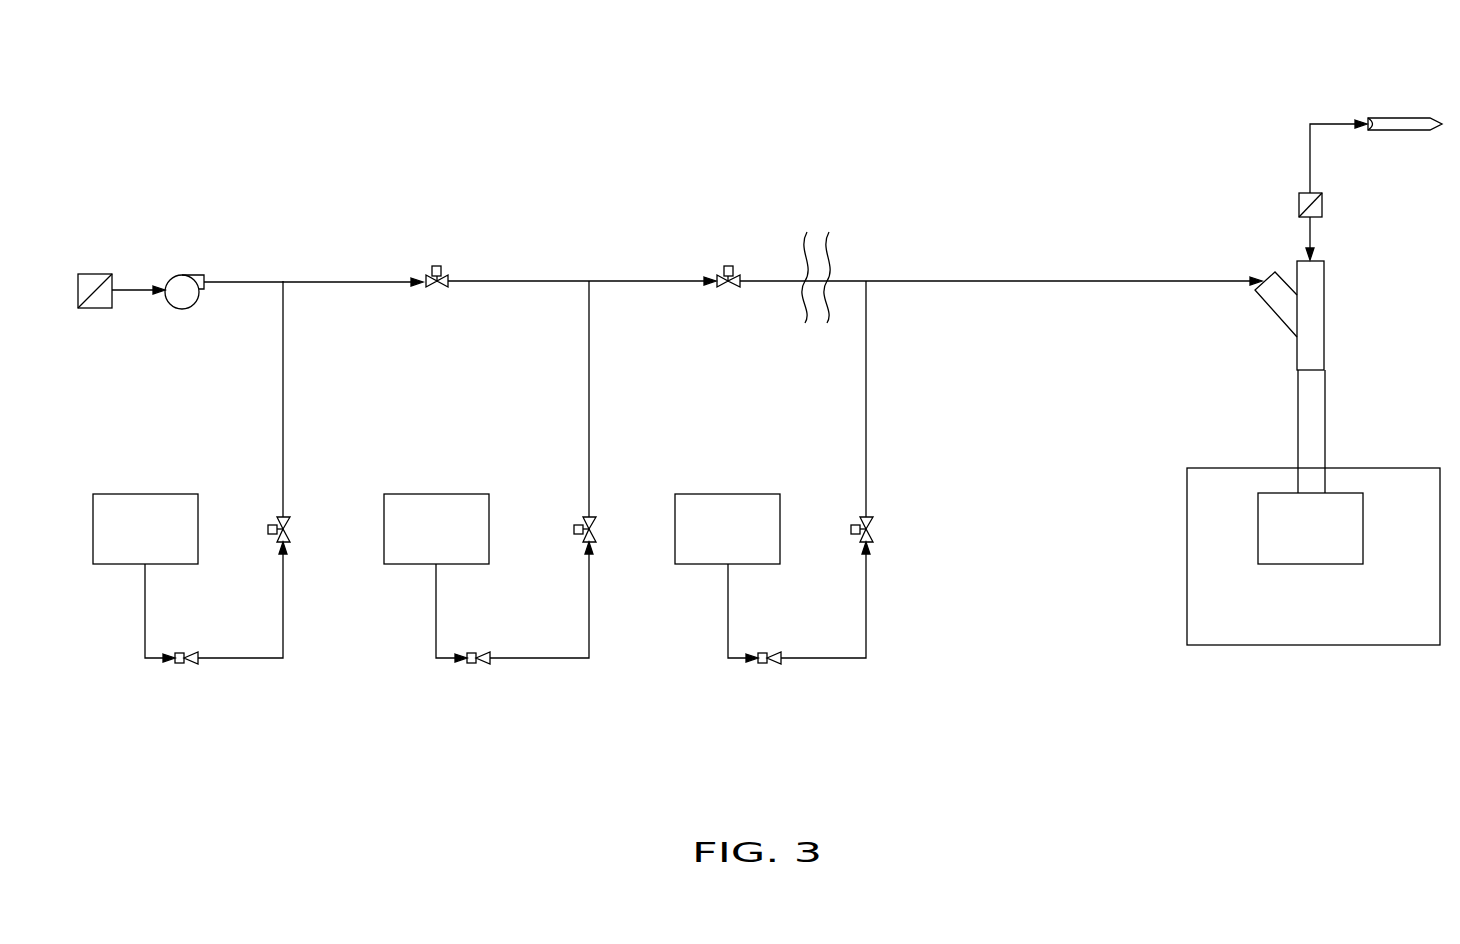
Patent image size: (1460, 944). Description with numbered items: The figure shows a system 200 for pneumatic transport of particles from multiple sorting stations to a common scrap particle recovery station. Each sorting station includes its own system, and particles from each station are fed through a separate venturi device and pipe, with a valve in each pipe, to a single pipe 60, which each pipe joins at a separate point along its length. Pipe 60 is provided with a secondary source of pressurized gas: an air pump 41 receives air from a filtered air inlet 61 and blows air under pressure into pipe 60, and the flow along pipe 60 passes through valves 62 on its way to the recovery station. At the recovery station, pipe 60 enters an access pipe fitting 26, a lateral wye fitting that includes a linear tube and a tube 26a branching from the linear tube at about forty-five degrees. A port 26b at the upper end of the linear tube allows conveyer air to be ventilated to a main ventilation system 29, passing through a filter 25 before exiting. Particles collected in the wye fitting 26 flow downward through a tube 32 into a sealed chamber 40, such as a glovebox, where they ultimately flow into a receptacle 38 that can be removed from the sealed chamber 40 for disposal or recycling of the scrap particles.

The filter 25 is at (1299, 205).
The access pipe fitting 26 is at (1324, 349).
The branching tube 26a is at (1275, 313).
The port 26b is at (1324, 279).
The main ventilation system 29 is at (1400, 118).
The tube or pipe 32 is at (1325, 438).
The receptacle 38 is at (1312, 564).
The sealed chamber 40 is at (1187, 555).
The air pump 41 is at (182, 275).
The single pipe 60 is at (330, 279).
The filtered air inlet 61 is at (93, 274).
The valve 62 is at (435, 266).
The system 200 is at (1206, 230).